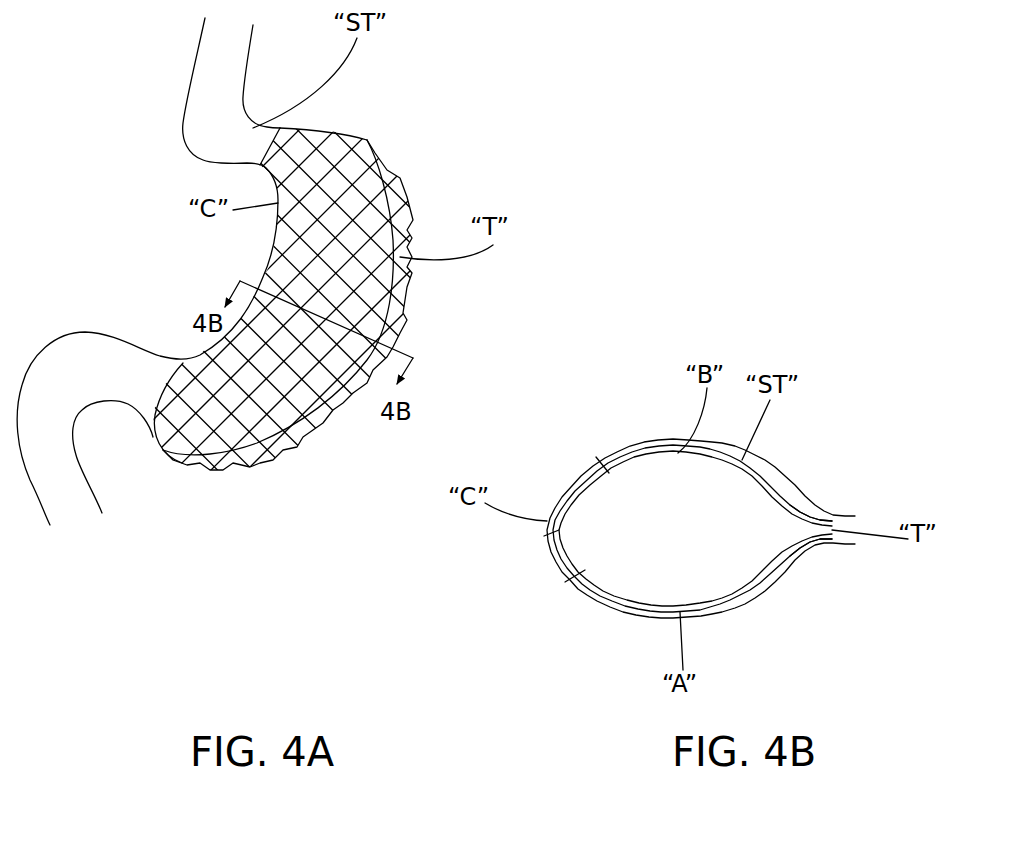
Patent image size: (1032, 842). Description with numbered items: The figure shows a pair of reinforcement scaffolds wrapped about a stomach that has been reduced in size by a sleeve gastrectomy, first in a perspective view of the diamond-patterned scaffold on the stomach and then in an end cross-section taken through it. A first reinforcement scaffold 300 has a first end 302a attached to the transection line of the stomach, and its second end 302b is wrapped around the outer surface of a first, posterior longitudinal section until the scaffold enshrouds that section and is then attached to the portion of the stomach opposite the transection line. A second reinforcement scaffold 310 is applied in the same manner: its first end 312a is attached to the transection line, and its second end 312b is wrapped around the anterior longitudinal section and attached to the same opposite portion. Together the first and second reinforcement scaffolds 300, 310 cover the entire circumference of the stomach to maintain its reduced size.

In FIG. 4A, the first reinforcement scaffold 300 is at (392, 167).
In FIG. 4B, the first reinforcement scaffold 300 is at (664, 503).
In FIG. 4B, the second reinforcement scaffold 310 is at (632, 436).
In FIG. 4B, the first end of second reinforcement scaffold 312a is at (805, 506).
In FIG. 4B, the second end of second reinforcement scaffold 312b is at (577, 470).
In FIG. 4B, the first end of first reinforcement scaffold 302a is at (807, 553).
In FIG. 4B, the second end of first reinforcement scaffold 302b is at (549, 538).